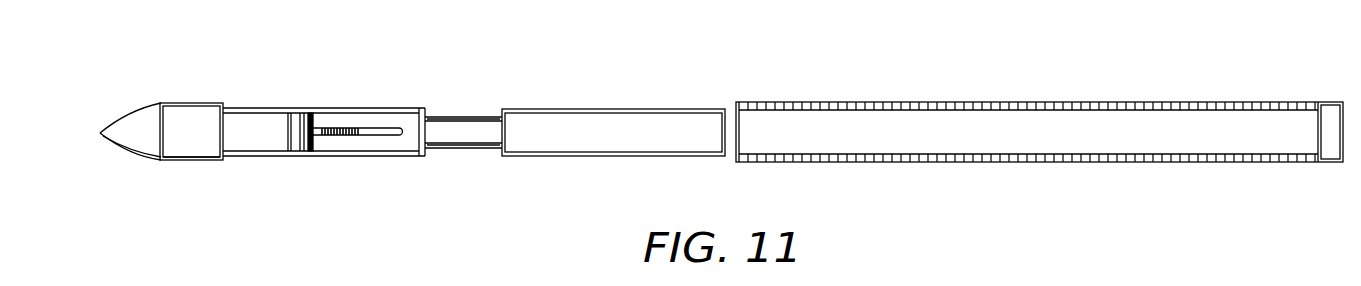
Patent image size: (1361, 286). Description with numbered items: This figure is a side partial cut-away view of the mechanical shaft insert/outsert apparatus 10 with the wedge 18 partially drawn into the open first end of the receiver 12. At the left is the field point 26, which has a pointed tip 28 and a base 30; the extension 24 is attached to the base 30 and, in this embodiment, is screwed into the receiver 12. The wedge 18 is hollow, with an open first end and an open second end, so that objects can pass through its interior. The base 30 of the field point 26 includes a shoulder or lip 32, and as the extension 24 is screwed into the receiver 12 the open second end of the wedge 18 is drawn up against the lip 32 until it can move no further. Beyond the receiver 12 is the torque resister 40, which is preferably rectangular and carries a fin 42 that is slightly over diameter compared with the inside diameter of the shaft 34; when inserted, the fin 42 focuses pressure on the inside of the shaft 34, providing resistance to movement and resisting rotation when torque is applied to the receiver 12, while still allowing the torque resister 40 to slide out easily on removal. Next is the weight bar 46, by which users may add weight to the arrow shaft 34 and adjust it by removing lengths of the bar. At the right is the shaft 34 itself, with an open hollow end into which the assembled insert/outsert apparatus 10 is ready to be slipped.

The mechanical shaft insert/outsert apparatus 10 is at (598, 56).
The receiver 12 is at (378, 158).
The wedge 18 is at (298, 107).
The extension 24 is at (348, 124).
The field point 26 is at (180, 102).
The tip 28 is at (100, 132).
The base 30 is at (178, 162).
The lip 32 is at (292, 158).
The shaft 34 is at (807, 102).
The torque resister 40 is at (452, 138).
The fin 42 is at (462, 115).
The weight bar 46 is at (567, 142).